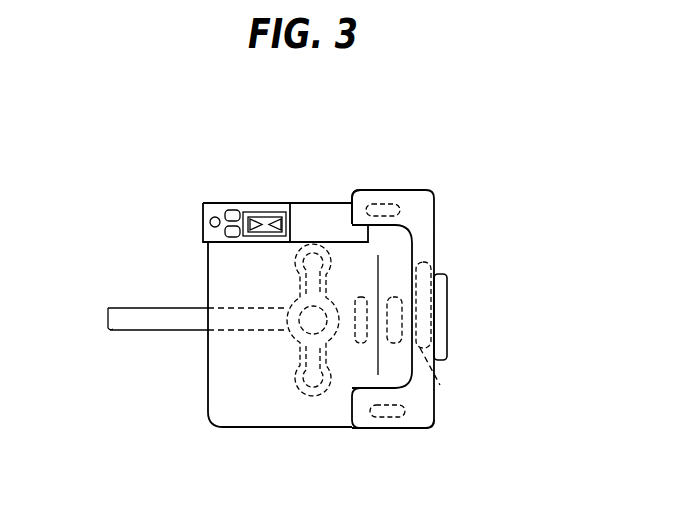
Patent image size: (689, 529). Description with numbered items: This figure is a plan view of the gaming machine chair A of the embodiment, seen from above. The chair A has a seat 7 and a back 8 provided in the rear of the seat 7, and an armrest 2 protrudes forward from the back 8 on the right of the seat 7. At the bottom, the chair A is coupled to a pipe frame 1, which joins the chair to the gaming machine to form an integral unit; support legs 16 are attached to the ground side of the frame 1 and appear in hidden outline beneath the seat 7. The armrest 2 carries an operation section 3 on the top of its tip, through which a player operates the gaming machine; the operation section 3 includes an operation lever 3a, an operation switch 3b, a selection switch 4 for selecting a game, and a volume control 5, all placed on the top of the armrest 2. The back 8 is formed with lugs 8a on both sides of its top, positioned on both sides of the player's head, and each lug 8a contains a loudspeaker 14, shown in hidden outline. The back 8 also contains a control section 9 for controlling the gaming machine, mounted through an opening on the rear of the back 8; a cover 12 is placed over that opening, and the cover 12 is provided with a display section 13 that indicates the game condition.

The pipe frame 1 is at (142, 333).
The armrest 2 is at (322, 203).
The operation section 3 is at (165, 213).
The operation lever 3a is at (212, 217).
The operation switch 3b is at (225, 233).
The selection switch 4 is at (232, 210).
The volume control 5 is at (268, 212).
The seat 7 is at (228, 408).
The back 8 is at (437, 252).
The lugs 8a is at (427, 190).
The control section 9 is at (440, 385).
The cover 12 is at (440, 362).
The display section 13 is at (444, 318).
The loudspeaker 14 is at (388, 203).
The support legs 16 is at (302, 385).
The chair A is at (468, 219).